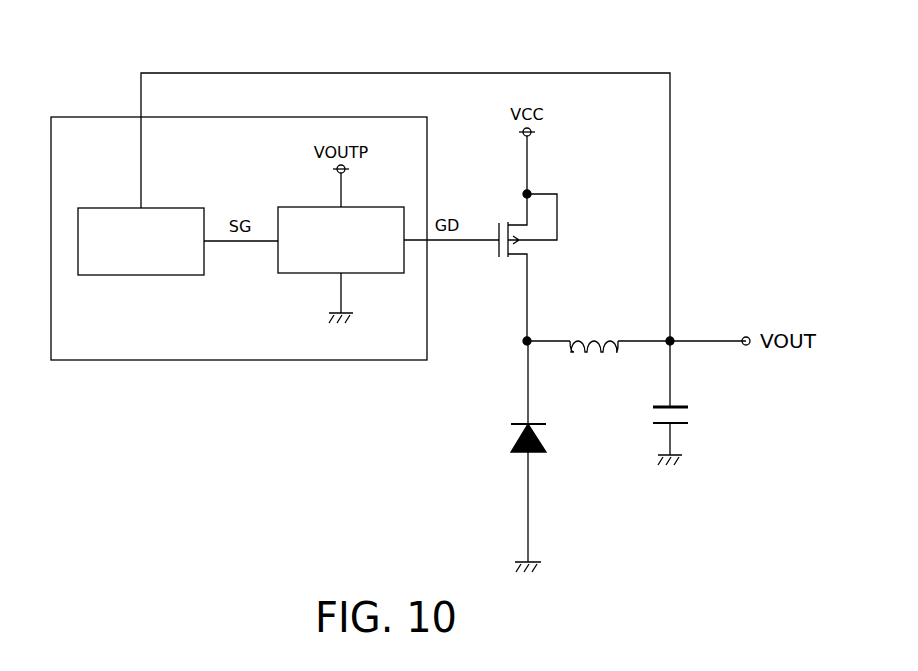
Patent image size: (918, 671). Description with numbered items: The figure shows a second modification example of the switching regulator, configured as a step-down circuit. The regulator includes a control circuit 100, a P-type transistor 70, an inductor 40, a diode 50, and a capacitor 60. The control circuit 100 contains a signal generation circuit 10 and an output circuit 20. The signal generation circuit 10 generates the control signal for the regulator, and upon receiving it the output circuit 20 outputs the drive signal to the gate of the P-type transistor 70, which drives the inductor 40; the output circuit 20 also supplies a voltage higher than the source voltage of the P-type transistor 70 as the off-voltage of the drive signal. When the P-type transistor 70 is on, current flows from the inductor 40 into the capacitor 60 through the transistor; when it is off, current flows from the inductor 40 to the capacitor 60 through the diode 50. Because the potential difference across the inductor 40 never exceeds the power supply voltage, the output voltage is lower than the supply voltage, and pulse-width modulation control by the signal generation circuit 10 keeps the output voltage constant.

The signal generation circuit 10 is at (159, 208).
The output circuit 20 is at (360, 207).
The inductor 40 is at (594, 330).
The diode 50 is at (547, 439).
The capacitor 60 is at (662, 406).
The P-type transistor 70 is at (513, 222).
The control circuit 100 is at (122, 361).